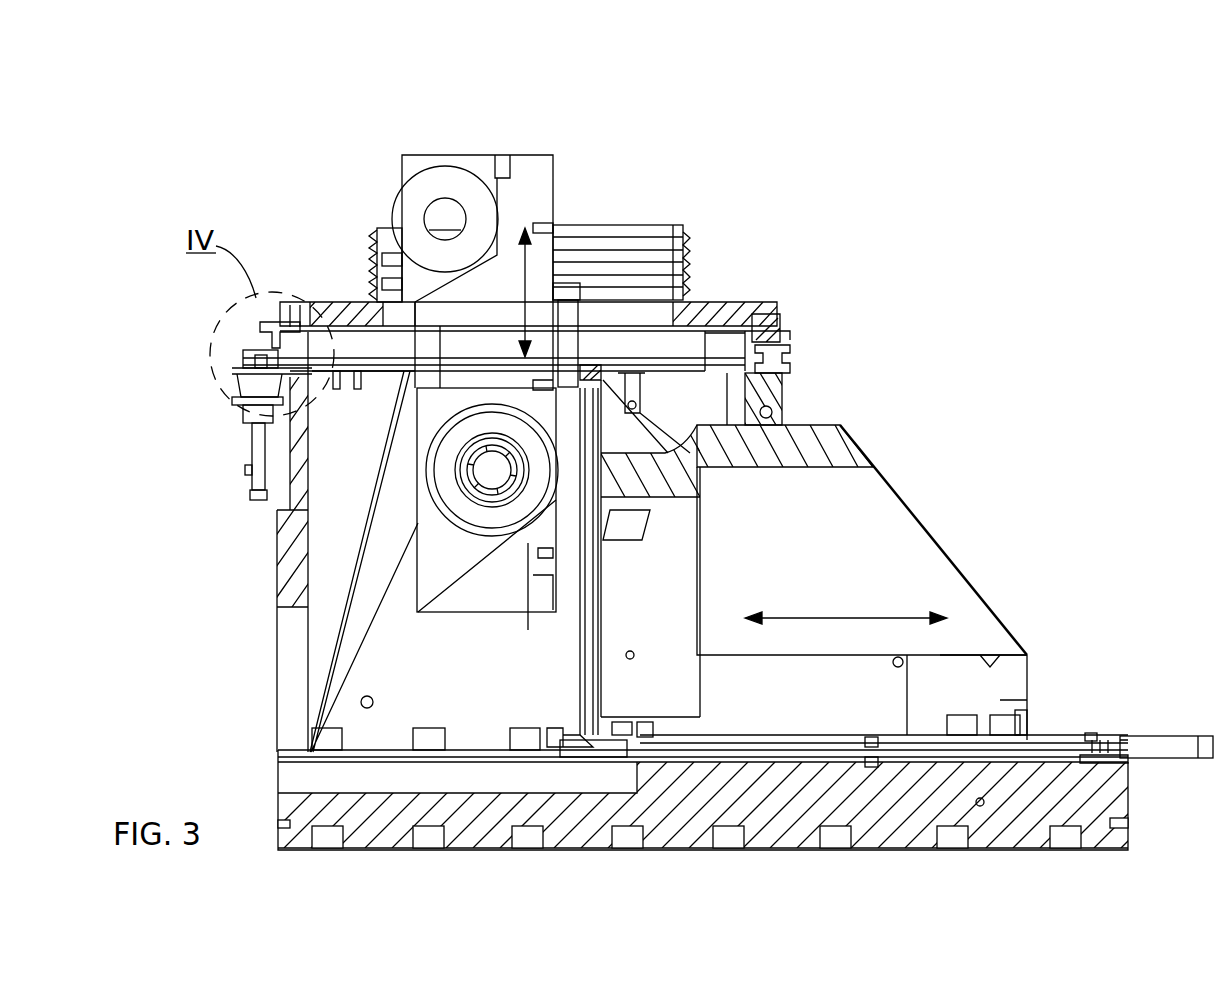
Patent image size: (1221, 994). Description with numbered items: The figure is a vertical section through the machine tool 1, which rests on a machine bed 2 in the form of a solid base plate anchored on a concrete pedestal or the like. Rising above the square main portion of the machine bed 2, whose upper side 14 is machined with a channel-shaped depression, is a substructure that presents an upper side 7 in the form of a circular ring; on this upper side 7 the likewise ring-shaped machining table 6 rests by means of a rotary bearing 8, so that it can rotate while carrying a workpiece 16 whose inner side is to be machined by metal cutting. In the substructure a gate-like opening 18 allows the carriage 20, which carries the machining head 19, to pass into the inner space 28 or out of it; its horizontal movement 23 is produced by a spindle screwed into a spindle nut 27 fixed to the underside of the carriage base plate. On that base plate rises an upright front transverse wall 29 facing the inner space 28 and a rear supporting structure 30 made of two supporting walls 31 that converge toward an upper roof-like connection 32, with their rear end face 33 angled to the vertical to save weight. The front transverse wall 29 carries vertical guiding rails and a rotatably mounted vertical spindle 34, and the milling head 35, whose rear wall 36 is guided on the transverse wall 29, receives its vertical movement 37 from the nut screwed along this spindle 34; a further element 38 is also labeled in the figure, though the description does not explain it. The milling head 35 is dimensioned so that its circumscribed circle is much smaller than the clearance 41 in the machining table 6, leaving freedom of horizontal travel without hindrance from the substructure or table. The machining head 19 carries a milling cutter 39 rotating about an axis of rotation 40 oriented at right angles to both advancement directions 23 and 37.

The machine tool 1 is at (885, 383).
The machine bed 2 is at (1090, 806).
The machining table 6 is at (690, 312).
The upper side 7 is at (773, 357).
The rotary bearing 8 is at (758, 302).
The upper side 14 is at (293, 760).
The workpiece 16 is at (375, 273).
The gate-like opening 18 is at (786, 398).
The machining head 19 is at (530, 180).
The carriage 20 is at (929, 526).
The movement 23 is at (878, 615).
The spindle nut 27 is at (870, 740).
The inner space 28 is at (377, 665).
The front transverse wall 29 is at (607, 680).
The rear supporting structure 30 is at (898, 497).
The supporting walls 31 is at (963, 625).
The roof-like connection 32 is at (830, 442).
The rear end face 33 is at (957, 563).
The vertical spindle 34 is at (593, 677).
The milling head 35 is at (443, 567).
The rear wall 36 is at (585, 392).
The vertical movement 37 is at (520, 313).
The bearing 38 is at (490, 467).
The milling cutter 39 is at (400, 215).
The axis of rotation 40 is at (444, 205).
The clearance 41 is at (658, 300).